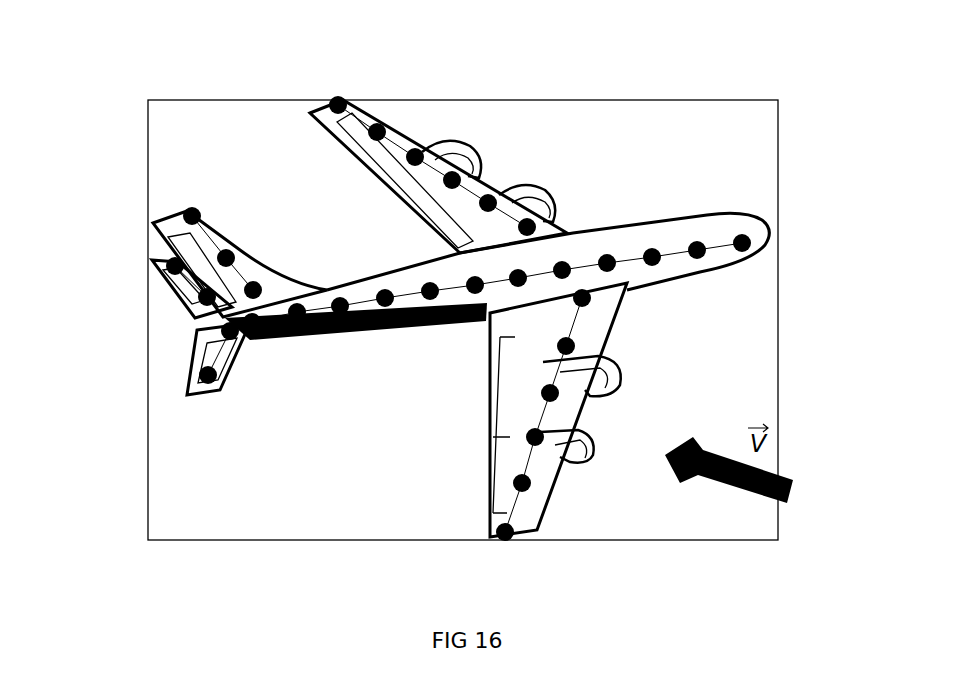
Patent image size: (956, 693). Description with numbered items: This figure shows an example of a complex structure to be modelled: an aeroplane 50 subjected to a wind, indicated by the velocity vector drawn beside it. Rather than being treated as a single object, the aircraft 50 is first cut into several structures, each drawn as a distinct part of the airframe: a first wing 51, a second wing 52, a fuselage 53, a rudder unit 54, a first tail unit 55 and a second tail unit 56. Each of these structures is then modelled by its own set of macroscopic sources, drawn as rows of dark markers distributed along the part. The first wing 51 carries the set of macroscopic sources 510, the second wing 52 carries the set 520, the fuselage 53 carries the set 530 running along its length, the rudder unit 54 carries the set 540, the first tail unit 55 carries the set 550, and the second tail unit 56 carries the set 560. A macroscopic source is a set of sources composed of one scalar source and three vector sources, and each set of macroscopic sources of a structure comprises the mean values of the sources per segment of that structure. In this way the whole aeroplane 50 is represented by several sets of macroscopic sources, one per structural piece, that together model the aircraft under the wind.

The aeroplane 50 is at (765, 196).
The first wing 51 is at (327, 134).
The set of macroscopic sources of the first wing 510 is at (383, 185).
The second wing 52 is at (555, 487).
The set of macroscopic sources of the second wing 520 is at (565, 338).
The fuselage 53 is at (672, 220).
The set of macroscopic sources of the fuselage 530 is at (610, 262).
The rudder unit 54 is at (170, 215).
The set of macroscopic sources of the rudder unit 540 is at (198, 214).
The first tail unit 55 is at (185, 291).
The set of macroscopic sources of the first tail unit 550 is at (190, 326).
The second tail unit 56 is at (237, 368).
The set of macroscopic sources of the second tail unit 560 is at (190, 365).